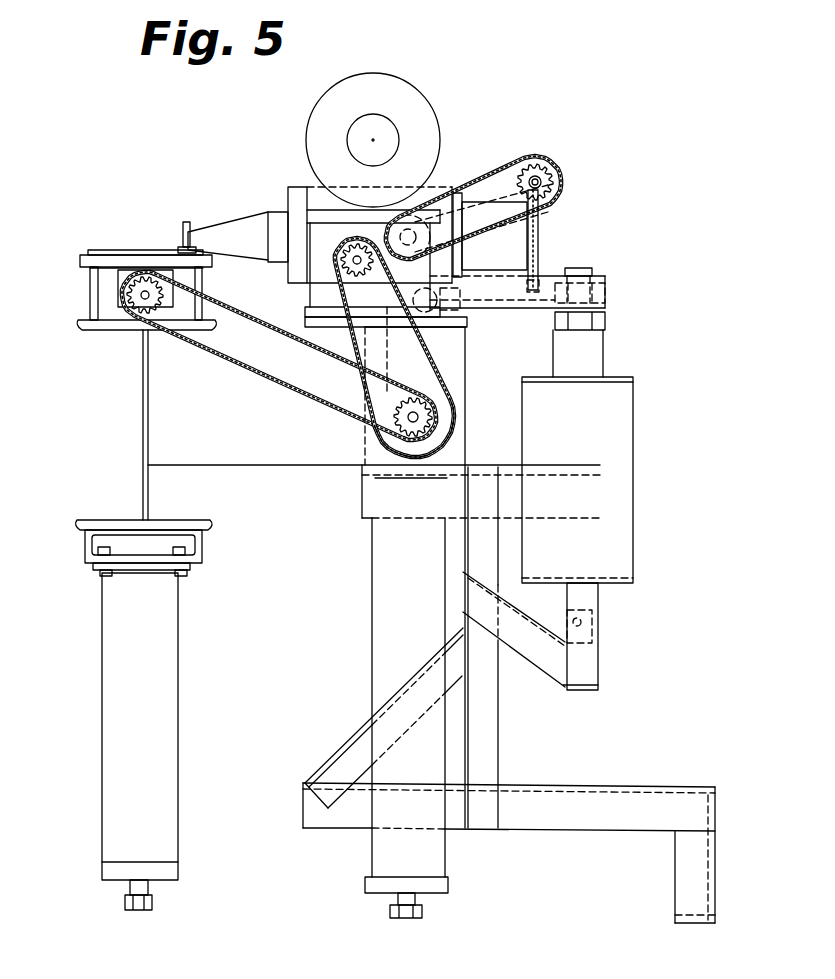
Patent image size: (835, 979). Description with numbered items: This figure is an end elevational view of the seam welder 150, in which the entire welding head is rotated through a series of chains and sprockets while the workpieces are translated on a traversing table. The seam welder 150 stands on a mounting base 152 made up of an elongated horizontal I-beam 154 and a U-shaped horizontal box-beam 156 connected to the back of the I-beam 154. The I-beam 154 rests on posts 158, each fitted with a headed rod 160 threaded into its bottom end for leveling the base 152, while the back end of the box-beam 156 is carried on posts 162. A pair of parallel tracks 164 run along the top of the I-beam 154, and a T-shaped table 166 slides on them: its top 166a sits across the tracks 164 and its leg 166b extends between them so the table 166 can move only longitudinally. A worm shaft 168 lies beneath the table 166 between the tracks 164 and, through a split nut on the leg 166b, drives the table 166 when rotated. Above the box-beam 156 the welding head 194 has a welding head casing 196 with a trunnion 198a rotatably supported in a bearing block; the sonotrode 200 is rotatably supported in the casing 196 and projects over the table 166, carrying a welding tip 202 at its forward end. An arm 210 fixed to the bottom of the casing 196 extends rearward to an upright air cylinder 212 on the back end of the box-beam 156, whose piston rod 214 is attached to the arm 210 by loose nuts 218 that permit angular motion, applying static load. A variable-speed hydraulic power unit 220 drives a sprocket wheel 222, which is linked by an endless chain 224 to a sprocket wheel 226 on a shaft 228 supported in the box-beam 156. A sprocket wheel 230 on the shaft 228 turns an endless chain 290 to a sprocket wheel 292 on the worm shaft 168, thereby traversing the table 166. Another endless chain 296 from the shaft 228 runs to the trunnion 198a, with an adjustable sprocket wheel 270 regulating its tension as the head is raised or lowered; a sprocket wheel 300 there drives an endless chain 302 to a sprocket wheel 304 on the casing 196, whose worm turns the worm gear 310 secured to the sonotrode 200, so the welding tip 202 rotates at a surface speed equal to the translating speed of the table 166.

The seam welder 150 is at (258, 504).
The mounting base 152 is at (143, 412).
The elongated horizontal I-beam 154 is at (143, 484).
The horizontal box-beam 156 is at (450, 390).
The posts 158 is at (165, 710).
The headed rod 160 is at (140, 890).
The posts 162 is at (385, 570).
The tracks 164 is at (90, 292).
The T-shaped table 166 is at (120, 255).
The top of the table 166a is at (142, 262).
The leg of the table 166b is at (105, 268).
The worm shaft 168 is at (142, 297).
The welding head 194 is at (278, 214).
The welding head casing 196 is at (304, 190).
The trunnion 198a is at (463, 241).
The sonotrode 200 is at (250, 232).
The welding tip 202 is at (185, 222).
The arm 210 is at (547, 276).
The air cylinder 212 is at (622, 442).
The piston rod 214 is at (592, 270).
The loose nuts 218 is at (606, 296).
The variable-speed hydraulic power unit 220 is at (415, 94).
The sprocket wheel 222 is at (345, 268).
The endless chain 224 is at (335, 333).
The sprocket wheel 226 is at (432, 438).
The shaft 228 is at (411, 424).
The sprocket wheel 230 is at (402, 409).
The sprocket wheel 270 is at (447, 310).
The endless chain 290 is at (230, 352).
The sprocket wheel 292 is at (130, 322).
The endless chain 296 is at (422, 334).
The sprocket wheel 300 is at (418, 228).
The endless chain 302 is at (492, 172).
The sprocket wheel 304 is at (548, 178).
The worm gear 310 is at (542, 222).